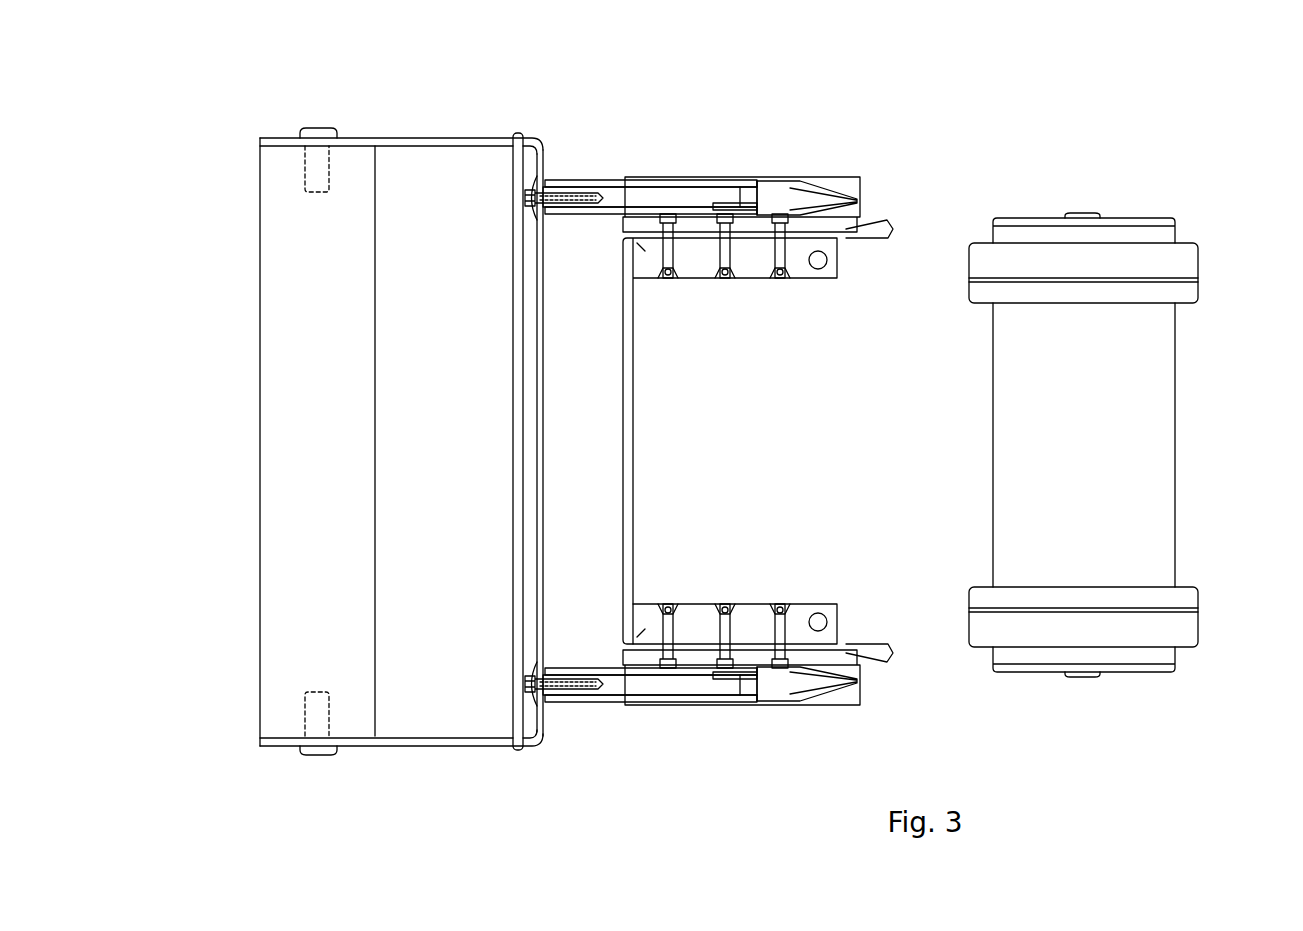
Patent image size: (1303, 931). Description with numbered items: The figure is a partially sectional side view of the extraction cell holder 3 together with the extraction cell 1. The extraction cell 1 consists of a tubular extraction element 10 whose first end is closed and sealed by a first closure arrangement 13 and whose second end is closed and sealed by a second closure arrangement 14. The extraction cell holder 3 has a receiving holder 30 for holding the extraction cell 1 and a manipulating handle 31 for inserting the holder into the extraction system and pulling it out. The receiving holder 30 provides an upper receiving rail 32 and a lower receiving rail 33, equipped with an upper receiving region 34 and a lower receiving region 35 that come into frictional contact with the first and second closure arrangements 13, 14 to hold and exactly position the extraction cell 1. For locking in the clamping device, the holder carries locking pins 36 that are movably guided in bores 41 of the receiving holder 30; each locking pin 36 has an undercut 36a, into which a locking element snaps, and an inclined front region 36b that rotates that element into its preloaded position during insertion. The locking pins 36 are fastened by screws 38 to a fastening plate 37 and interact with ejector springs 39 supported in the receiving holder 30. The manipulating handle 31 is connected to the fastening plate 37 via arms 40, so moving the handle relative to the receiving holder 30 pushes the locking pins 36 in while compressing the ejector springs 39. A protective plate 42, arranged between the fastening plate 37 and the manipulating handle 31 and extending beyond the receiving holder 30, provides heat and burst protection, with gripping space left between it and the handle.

The extraction cell 1 is at (1086, 149).
The extraction cell holder 3 is at (548, 98).
The tubular extraction element 10 is at (1145, 432).
The first closure arrangement 13 is at (1174, 260).
The second closure arrangement 14 is at (1172, 630).
The receiving holder 30 is at (732, 152).
The manipulating handle 31 is at (296, 381).
The upper receiving rail 32 is at (853, 250).
The lower receiving rail 33 is at (848, 650).
The upper receiving region 34 is at (752, 268).
The lower receiving region 35 is at (745, 627).
The locking pin 36 is at (612, 200).
The undercut 36a is at (757, 180).
The inclined front region 36b is at (858, 198).
The fastening plate 37 is at (540, 256).
The screw 38 is at (563, 186).
The ejector spring 39 is at (654, 182).
The arm 40 is at (421, 140).
The bore 41 is at (845, 178).
The protective plate 42 is at (513, 282).